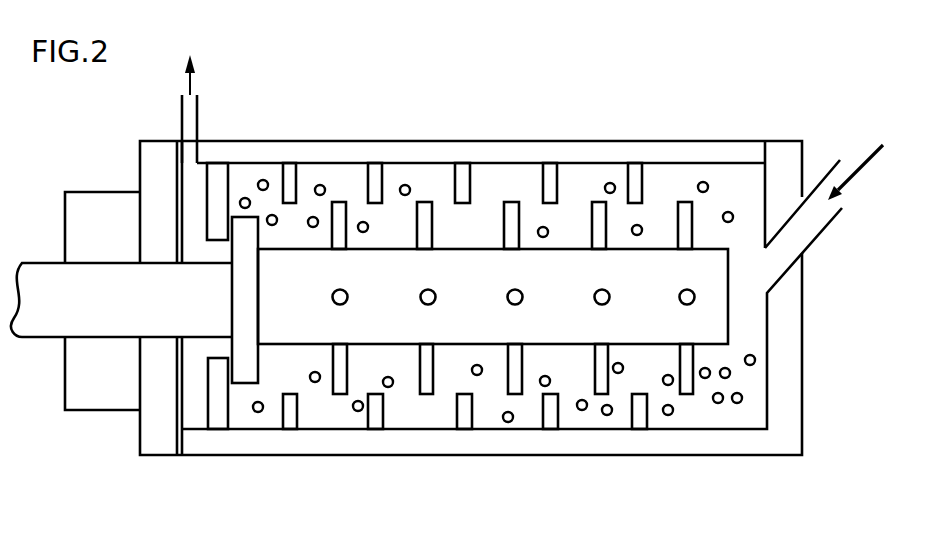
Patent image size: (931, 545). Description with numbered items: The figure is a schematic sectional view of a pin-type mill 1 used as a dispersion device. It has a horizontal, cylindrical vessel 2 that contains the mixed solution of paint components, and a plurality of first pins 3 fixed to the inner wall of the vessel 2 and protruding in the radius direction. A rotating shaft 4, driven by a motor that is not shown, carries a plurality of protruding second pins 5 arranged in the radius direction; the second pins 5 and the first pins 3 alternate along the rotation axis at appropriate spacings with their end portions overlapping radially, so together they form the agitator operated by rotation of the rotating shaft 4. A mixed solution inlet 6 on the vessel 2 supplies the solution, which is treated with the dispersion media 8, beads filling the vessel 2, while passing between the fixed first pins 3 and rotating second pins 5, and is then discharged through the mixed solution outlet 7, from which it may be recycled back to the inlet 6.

The pin-type mill 1 is at (622, 91).
The vessel 2 is at (310, 455).
The first pins 3 is at (547, 429).
The rotating shaft 4 is at (292, 318).
The second pins 5 is at (592, 198).
The mixed solution inlet 6 is at (813, 225).
The mixed solution outlet 7 is at (200, 98).
The dispersion media 8 is at (723, 403).